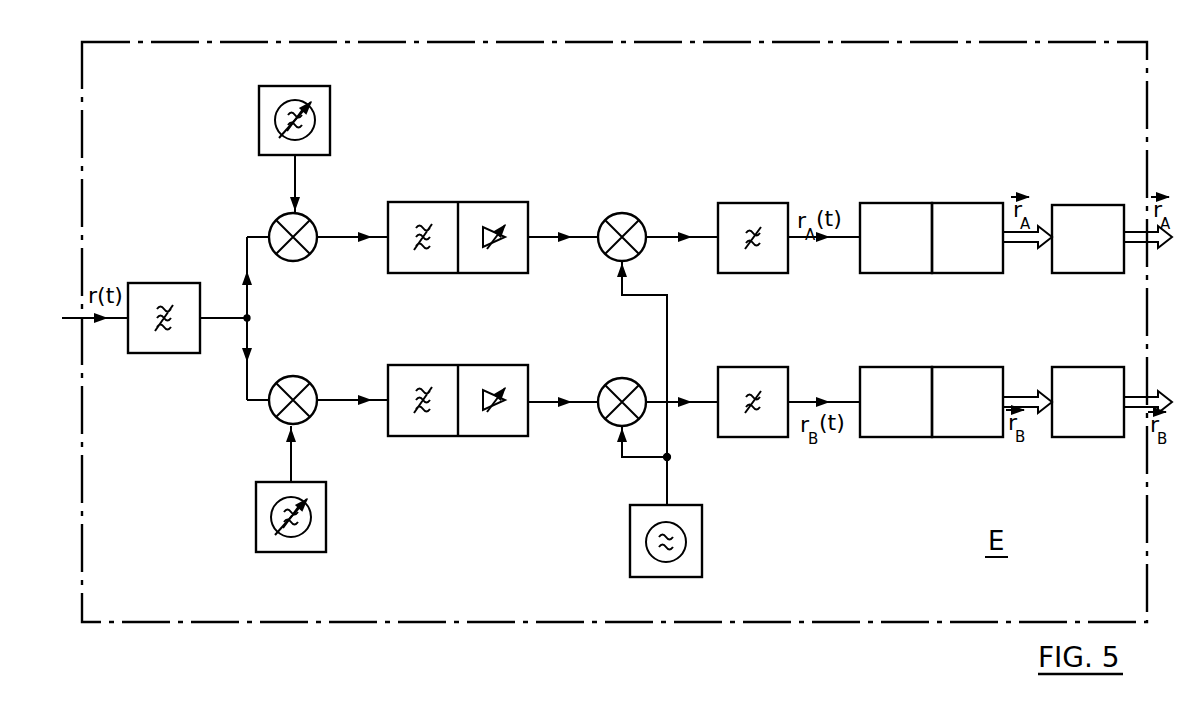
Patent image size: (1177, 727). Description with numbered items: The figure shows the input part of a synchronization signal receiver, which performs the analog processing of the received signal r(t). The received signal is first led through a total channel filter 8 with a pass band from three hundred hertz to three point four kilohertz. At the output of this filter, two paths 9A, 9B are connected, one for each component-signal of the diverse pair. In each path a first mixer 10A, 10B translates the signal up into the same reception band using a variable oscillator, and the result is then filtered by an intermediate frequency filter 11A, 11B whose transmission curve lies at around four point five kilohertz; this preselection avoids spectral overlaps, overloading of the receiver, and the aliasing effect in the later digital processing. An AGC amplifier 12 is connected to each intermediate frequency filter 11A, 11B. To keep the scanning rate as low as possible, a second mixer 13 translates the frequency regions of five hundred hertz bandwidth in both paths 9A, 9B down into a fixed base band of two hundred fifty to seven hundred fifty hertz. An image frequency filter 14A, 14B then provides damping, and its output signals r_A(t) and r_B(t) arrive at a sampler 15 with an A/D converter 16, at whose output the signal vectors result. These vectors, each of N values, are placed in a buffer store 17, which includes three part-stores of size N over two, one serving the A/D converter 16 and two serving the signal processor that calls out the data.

The total channel filter 8 is at (160, 283).
The path 9A is at (247, 236).
The path 9B is at (247, 383).
The first mixer 10A is at (259, 125).
The first mixer 10B is at (256, 515).
The intermediate frequency filter 11A is at (406, 202).
The intermediate frequency filter 11B is at (426, 436).
The AGC amplifier 12 is at (501, 273).
The second mixer 13 is at (630, 543).
The image frequency filter 14A is at (741, 203).
The image frequency filter 14B is at (752, 437).
The sampler 15 is at (900, 273).
The A/D converter 16 is at (975, 273).
The buffer store 17 is at (1088, 273).